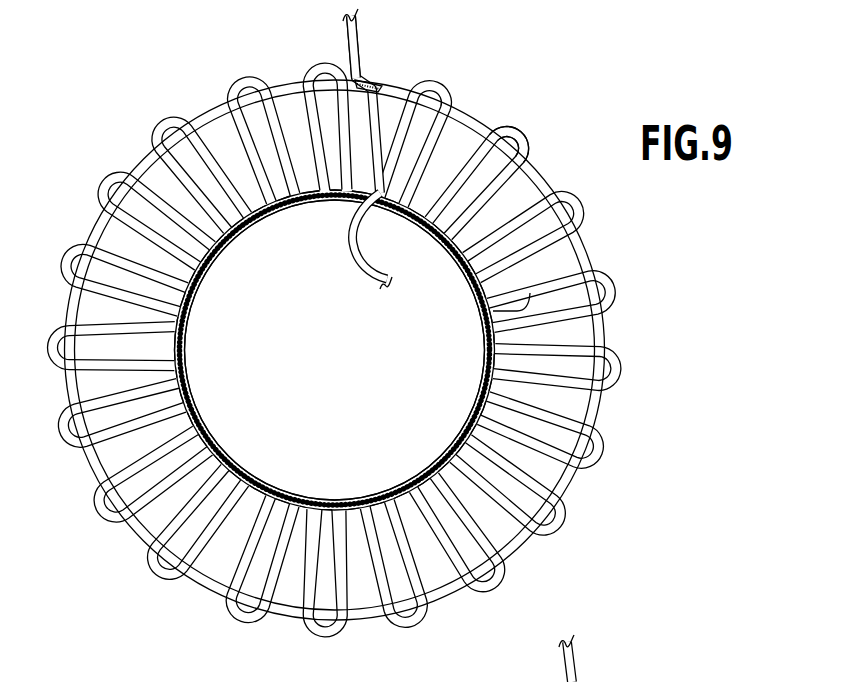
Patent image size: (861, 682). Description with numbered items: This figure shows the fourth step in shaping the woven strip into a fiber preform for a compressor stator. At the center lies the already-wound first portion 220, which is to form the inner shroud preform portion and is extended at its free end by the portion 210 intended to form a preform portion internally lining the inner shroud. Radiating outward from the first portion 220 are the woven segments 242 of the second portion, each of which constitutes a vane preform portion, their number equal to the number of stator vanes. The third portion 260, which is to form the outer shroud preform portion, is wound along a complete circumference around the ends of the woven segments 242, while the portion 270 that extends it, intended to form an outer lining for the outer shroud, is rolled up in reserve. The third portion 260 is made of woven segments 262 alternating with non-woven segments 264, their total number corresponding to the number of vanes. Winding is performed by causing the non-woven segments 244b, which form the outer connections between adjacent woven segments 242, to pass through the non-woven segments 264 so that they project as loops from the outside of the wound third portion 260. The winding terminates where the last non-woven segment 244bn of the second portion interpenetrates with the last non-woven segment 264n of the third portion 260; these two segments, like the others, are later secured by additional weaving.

The portion for internally lining the inner shroud 210 is at (352, 248).
The first portion 220 is at (218, 272).
The woven segments 242 is at (492, 313).
The non-woven segments 244b is at (587, 207).
The last non-woven segment 244bn is at (380, 84).
The third portion 260 is at (616, 329).
The woven segments 262 is at (473, 122).
The non-woven segments 264 is at (517, 138).
The last non-woven segment 264n is at (330, 66).
The portion for providing an outer lining for the outer shroud 270 is at (350, 22).